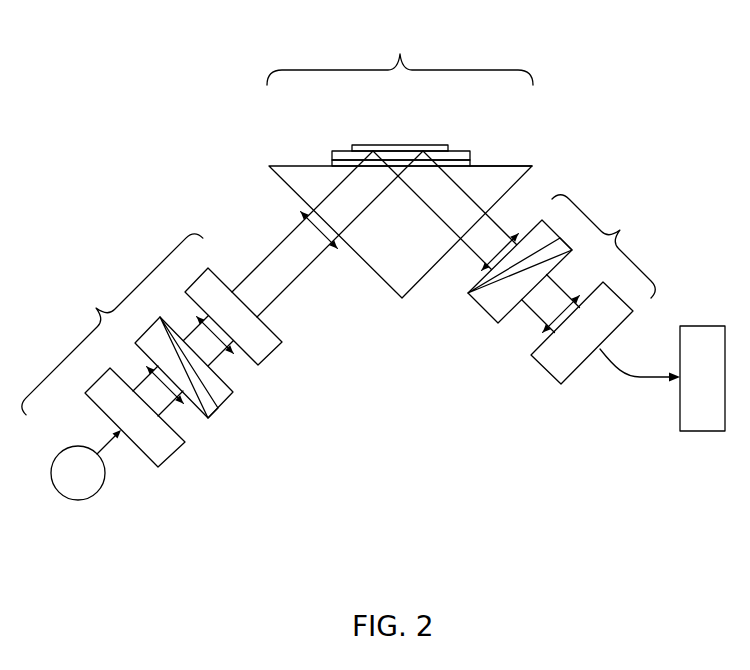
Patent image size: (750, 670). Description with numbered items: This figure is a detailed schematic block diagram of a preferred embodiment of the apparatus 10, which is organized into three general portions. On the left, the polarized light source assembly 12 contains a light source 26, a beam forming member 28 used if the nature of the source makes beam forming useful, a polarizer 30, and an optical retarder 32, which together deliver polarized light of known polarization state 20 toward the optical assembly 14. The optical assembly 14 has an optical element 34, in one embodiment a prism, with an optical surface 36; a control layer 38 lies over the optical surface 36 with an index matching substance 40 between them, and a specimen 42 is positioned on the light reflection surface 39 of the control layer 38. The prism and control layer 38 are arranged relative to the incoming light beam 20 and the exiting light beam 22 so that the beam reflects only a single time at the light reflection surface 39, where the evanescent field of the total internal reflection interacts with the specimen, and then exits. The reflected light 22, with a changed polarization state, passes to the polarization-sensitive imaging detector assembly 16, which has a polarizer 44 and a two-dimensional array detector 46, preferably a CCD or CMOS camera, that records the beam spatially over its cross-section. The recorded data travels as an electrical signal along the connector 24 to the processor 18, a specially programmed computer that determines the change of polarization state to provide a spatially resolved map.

The apparatus 10 is at (614, 70).
The polarized light source assembly 12 is at (105, 317).
The optical assembly 14 is at (400, 54).
The polarization-sensitive imaging detector assembly 16 is at (610, 239).
The processor 18 is at (712, 326).
The polarized light of known polarization state 20 is at (292, 284).
The reflected light 22 is at (473, 258).
The connector 24 is at (631, 378).
The light source 26 is at (98, 493).
The beam forming member 28 is at (175, 455).
The polarizer 30 is at (222, 407).
The optical retarder 32 is at (275, 353).
The optical element 34 is at (388, 288).
The optical surface 36 is at (524, 164).
The control layer 38 is at (440, 146).
The light reflection surface 39 is at (467, 151).
The index matching substance 40 is at (339, 152).
The specimen 42 is at (359, 145).
The polarizer 44 is at (485, 313).
The two-dimensional array detector 46 is at (541, 368).